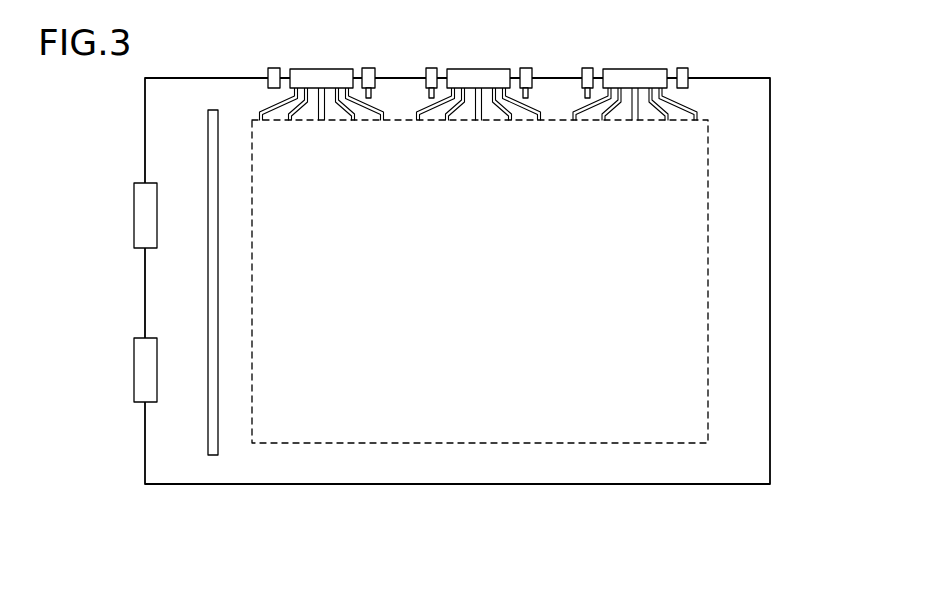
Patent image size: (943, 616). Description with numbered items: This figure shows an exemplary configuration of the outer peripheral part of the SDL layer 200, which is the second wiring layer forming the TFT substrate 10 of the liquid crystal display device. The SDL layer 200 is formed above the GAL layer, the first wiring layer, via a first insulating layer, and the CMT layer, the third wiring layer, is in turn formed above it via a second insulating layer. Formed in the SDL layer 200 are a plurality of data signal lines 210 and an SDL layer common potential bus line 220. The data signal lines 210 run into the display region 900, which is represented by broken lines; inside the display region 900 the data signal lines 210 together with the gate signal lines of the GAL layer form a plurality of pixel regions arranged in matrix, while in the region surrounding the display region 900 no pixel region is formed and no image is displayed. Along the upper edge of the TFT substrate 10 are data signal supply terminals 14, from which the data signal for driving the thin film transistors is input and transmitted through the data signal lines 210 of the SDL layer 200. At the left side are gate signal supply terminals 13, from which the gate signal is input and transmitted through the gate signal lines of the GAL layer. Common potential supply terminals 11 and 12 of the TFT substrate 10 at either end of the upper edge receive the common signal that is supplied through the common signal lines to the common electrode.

The TFT substrate 10 is at (500, 333).
The common potential supply terminal 11 is at (272, 67).
The common potential supply terminal 12 is at (684, 67).
The gate signal supply terminal 13 is at (134, 212).
The data signal supply terminal 14 is at (321, 68).
The SDL layer 200 is at (755, 274).
The data signal lines 210 is at (554, 320).
The SDL layer common potential bus line 220 is at (208, 440).
The display region 900 is at (491, 445).